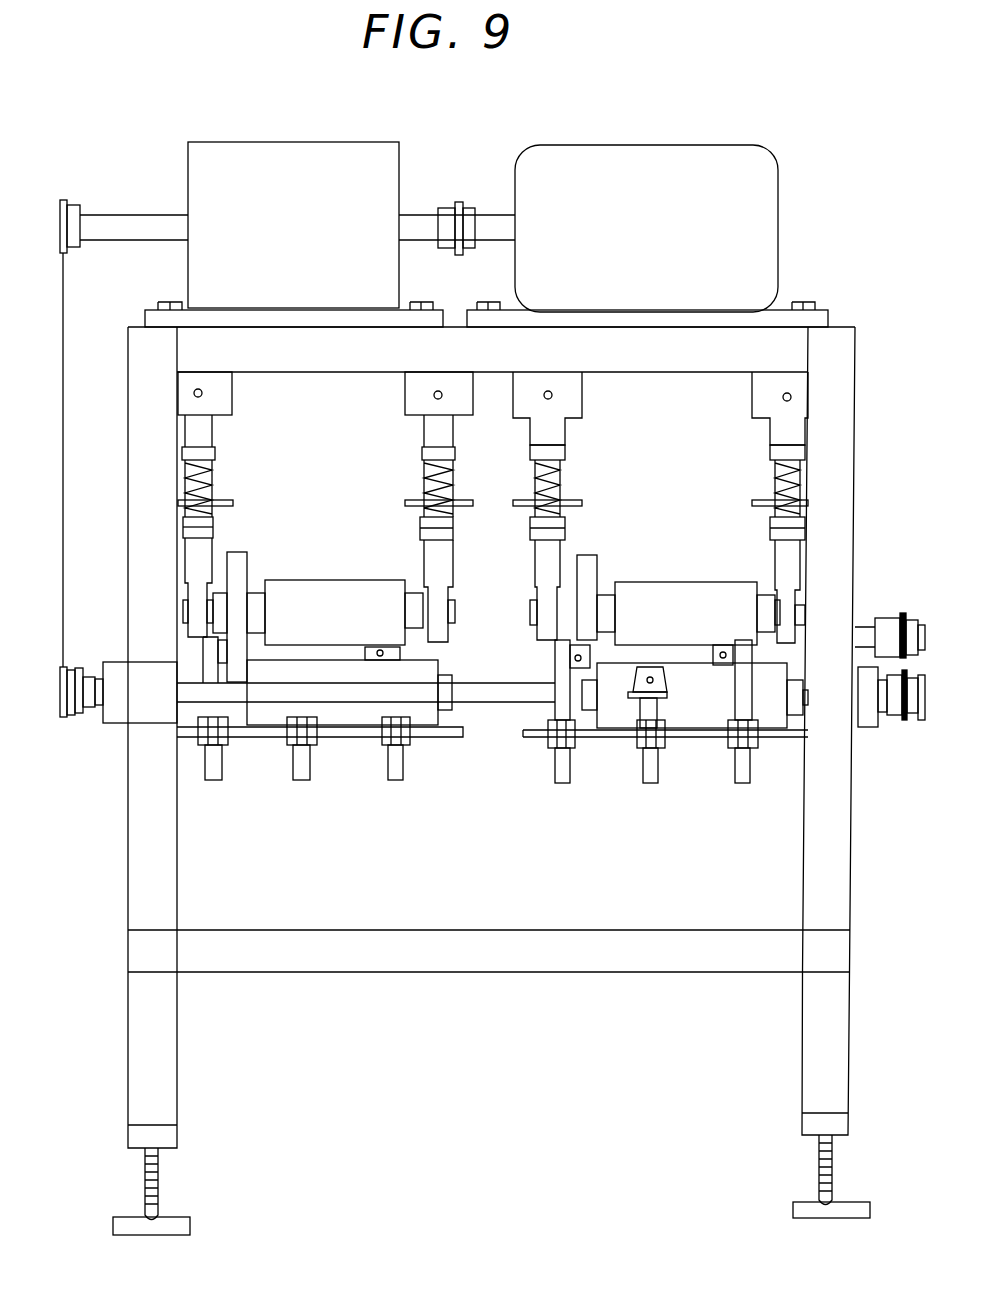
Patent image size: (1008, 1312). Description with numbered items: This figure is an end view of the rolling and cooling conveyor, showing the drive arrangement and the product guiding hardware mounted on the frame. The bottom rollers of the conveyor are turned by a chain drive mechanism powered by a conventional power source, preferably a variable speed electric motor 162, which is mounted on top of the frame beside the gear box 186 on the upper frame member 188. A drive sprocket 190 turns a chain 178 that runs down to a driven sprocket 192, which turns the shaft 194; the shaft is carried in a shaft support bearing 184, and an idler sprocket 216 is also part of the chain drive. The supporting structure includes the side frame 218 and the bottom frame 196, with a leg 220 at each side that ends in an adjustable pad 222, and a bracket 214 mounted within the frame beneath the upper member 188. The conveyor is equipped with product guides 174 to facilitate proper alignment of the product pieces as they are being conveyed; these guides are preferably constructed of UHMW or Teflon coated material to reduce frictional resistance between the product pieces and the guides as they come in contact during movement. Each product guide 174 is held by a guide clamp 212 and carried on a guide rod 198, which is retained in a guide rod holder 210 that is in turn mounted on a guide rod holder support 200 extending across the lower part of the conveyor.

The variable speed electric motor 162 is at (693, 145).
The product guide 174 is at (597, 652).
The chain 178 is at (66, 440).
The shaft support bearing 184 is at (115, 660).
The gear box 186 is at (302, 142).
The upper frame member 188 is at (798, 349).
The drive sprocket 190 is at (63, 718).
The driven sprocket 192 is at (76, 716).
The shaft 194 is at (498, 703).
The bottom frame 196 is at (522, 974).
The guide rod 198 is at (563, 784).
The guide rod holder support 200 is at (613, 738).
The guide rod holder 210 is at (664, 750).
The guide clamp 212 is at (578, 650).
The bracket 214 is at (810, 409).
The idler sprocket 216 is at (904, 615).
The side frame 218 is at (850, 872).
The leg 220 is at (850, 1045).
The adjustable pad 222 is at (833, 1178).